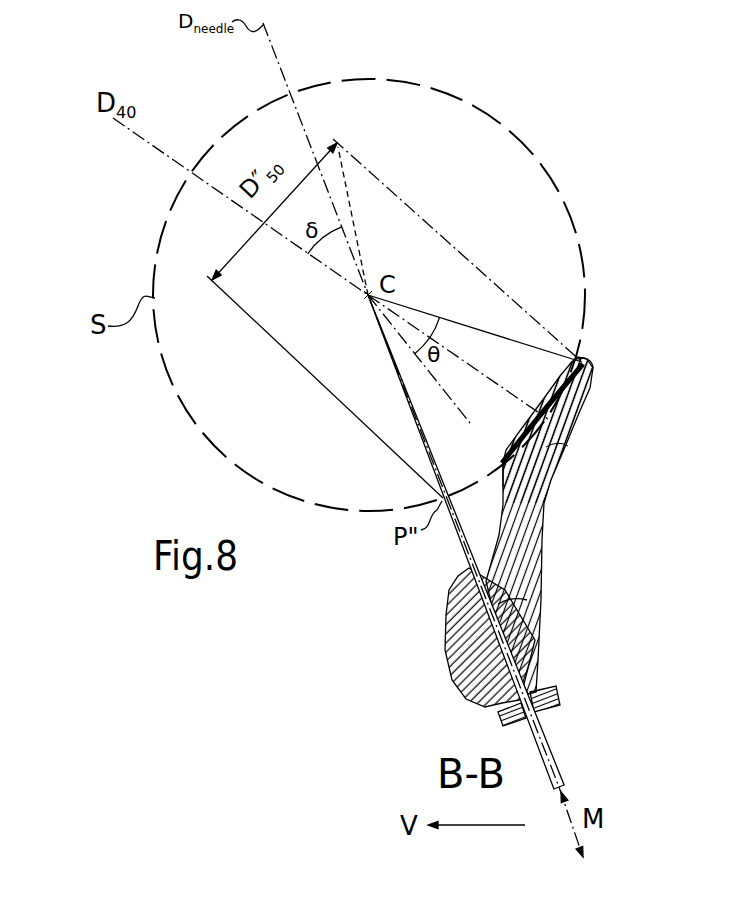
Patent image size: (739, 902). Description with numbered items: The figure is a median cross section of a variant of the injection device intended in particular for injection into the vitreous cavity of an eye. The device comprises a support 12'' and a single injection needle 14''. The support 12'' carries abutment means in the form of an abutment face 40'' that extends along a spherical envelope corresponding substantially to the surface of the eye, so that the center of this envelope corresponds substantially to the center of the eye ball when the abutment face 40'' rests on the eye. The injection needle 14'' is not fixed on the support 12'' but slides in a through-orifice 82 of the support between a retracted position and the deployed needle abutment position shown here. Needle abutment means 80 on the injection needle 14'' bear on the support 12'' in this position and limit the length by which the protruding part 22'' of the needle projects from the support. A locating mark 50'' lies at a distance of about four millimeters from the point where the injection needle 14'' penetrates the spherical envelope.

The support 12'' is at (548, 520).
The injection needle 14'' is at (466, 542).
The protruding part 22'' is at (485, 457).
The abutment face 40'' is at (557, 430).
The locating mark 50'' is at (609, 341).
The needle abutment means 80 is at (557, 705).
The through-orifice 82 is at (531, 622).